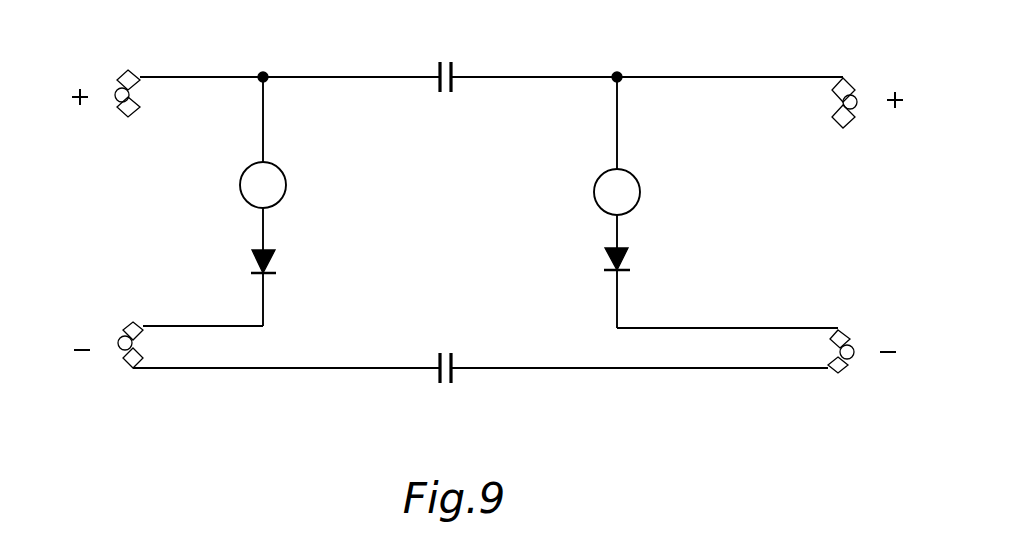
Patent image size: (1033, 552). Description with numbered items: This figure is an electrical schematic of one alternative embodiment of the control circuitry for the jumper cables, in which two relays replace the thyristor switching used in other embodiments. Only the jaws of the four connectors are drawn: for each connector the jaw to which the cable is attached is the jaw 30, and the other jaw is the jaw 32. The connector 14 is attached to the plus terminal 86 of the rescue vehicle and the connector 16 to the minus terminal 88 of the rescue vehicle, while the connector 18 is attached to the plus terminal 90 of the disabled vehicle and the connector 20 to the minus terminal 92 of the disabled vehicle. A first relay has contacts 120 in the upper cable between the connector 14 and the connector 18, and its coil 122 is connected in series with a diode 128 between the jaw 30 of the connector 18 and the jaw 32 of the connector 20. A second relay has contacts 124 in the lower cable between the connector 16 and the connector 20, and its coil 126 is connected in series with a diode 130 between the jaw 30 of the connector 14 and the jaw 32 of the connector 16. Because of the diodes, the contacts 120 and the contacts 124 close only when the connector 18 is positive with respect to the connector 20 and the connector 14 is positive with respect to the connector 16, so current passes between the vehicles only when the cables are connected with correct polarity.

The connector 14 is at (844, 76).
The connector 16 is at (836, 377).
The connector 18 is at (133, 71).
The connector 20 is at (134, 371).
The jaw 30 is at (121, 77).
The jaw 32 is at (132, 320).
The plus terminal 86 is at (856, 106).
The minus terminal 88 is at (850, 346).
The plus terminal 90 is at (117, 100).
The minus terminal 92 is at (118, 340).
The contacts 120 is at (445, 85).
The coil 122 is at (292, 185).
The contacts 124 is at (450, 351).
The coil 126 is at (586, 192).
The diode 128 is at (288, 263).
The diode 130 is at (641, 261).